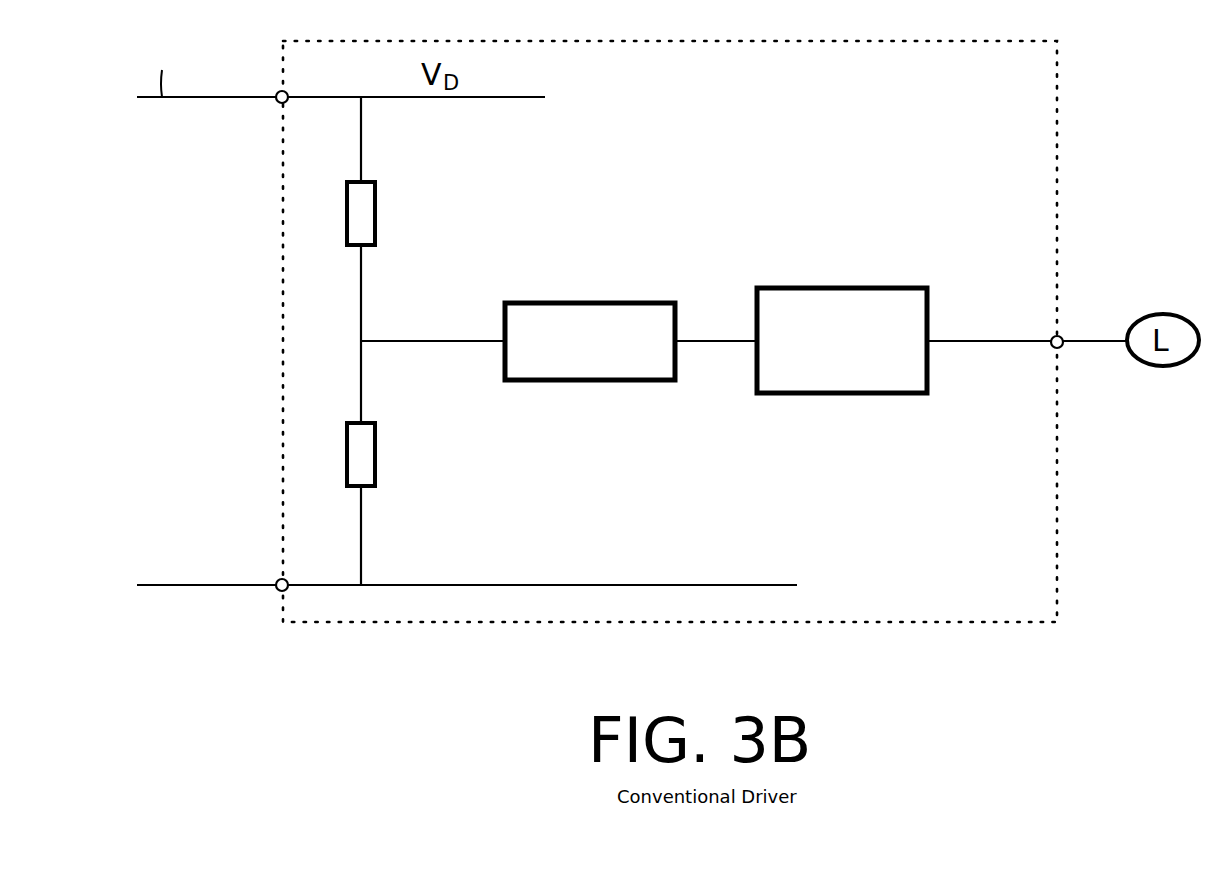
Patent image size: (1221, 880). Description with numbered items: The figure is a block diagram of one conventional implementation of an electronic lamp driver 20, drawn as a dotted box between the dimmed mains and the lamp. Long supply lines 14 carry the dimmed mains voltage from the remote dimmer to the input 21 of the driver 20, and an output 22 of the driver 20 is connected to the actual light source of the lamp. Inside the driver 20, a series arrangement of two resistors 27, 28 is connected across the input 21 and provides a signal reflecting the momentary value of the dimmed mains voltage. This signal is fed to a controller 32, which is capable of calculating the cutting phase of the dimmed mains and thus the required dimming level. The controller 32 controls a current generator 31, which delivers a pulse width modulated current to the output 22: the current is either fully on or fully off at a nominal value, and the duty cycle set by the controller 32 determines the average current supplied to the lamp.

The supply lines 14 is at (162, 67).
The electronic lamp driver 20 is at (255, 355).
The input 21 is at (261, 326).
The output 22 is at (1076, 328).
The resistor 27 is at (338, 213).
The resistor 28 is at (338, 454).
The current generator 31 is at (842, 340).
The controller 32 is at (590, 341).